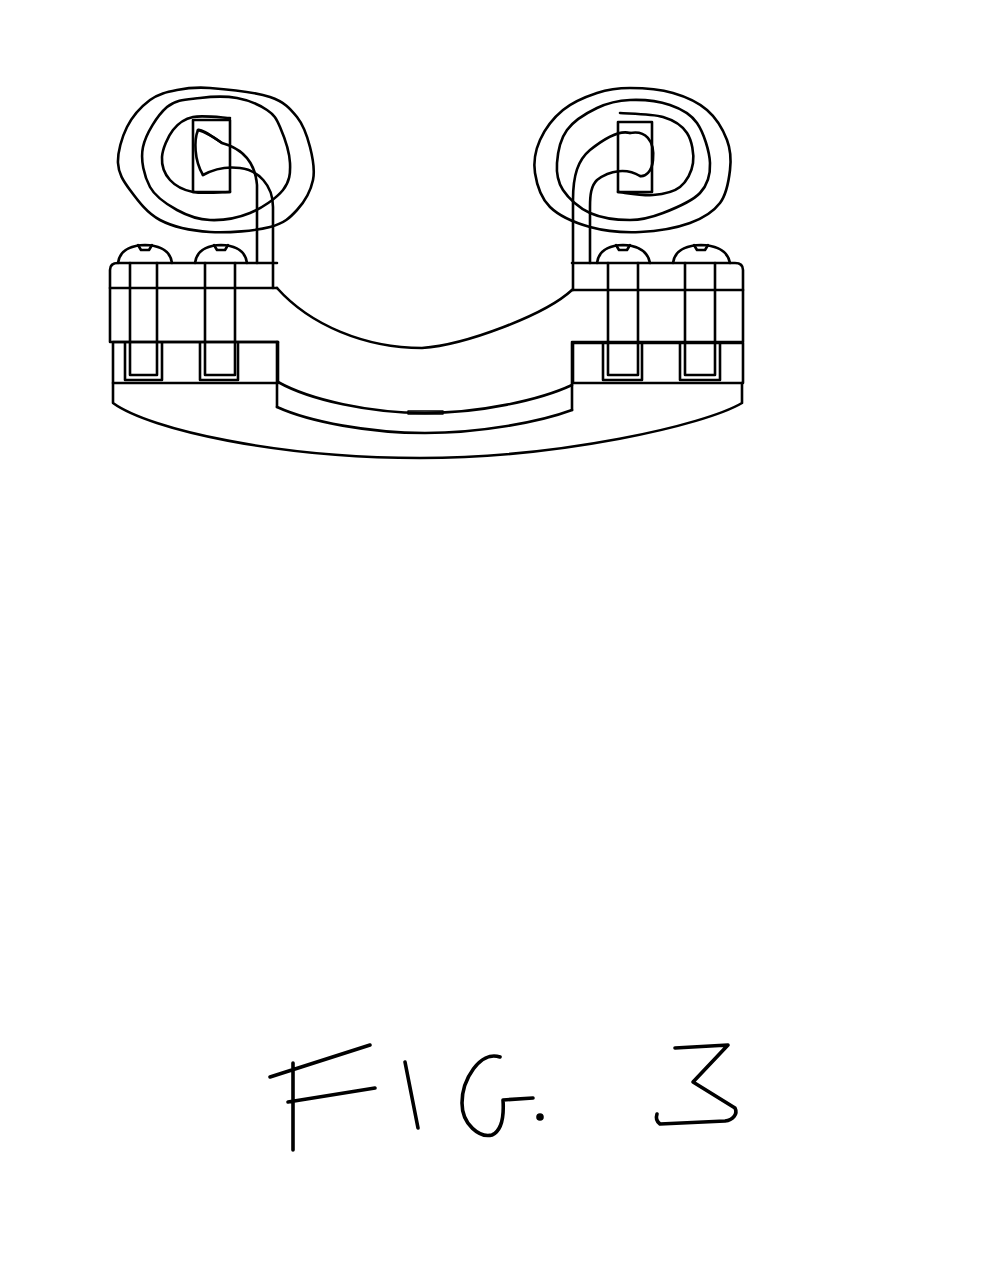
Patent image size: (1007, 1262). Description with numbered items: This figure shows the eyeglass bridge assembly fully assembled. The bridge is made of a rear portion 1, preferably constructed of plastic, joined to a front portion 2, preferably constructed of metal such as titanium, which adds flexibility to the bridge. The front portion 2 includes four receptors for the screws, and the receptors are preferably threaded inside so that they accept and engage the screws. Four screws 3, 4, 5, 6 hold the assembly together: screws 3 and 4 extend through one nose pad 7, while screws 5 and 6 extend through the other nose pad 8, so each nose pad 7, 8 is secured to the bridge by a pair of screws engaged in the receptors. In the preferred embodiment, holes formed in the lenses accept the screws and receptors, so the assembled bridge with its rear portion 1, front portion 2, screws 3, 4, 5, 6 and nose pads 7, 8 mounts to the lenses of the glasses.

The rear portion of the bridge 1 is at (733, 320).
The front portion of the bridge 2 is at (603, 418).
The screw 3 is at (727, 255).
The screw 4 is at (597, 254).
The screw 5 is at (262, 246).
The screw 6 is at (133, 247).
The nose pad 7 is at (670, 137).
The nose pad 8 is at (230, 142).